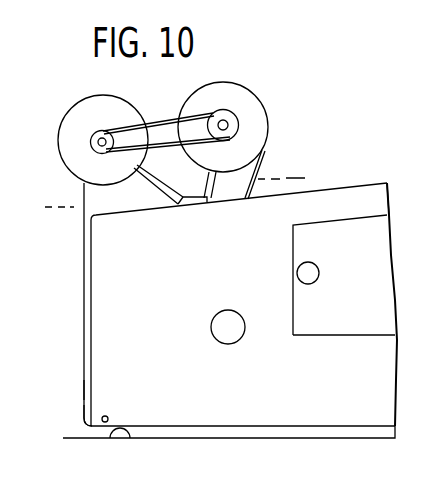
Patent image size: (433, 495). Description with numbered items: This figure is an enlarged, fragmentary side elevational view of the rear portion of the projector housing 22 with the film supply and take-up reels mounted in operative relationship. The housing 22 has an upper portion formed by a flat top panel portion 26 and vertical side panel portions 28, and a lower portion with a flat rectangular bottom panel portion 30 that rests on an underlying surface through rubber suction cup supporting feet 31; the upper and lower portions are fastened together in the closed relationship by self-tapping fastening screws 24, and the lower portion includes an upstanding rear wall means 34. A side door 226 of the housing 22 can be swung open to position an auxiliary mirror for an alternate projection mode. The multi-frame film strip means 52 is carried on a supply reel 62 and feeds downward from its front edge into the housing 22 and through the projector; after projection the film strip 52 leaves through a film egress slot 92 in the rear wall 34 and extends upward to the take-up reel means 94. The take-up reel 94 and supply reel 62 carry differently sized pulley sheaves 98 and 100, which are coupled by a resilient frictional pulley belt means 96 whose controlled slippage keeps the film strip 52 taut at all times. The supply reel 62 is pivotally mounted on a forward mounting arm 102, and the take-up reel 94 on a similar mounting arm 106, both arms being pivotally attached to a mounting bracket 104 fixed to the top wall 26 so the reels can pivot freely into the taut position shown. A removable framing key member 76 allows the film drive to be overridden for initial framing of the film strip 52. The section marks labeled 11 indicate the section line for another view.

The section line 11- 11 is at (303, 112).
The housing 22 is at (347, 183).
The self-tapping fastening screws 24 is at (110, 418).
The top panel portion 26 is at (388, 183).
The side panel portions 28 is at (175, 262).
The bottom panel portion 30 is at (224, 434).
The rubber suction cup supporting feet 31 is at (114, 440).
The rear wall means 34 is at (88, 280).
The multi-frame film strip means 52 is at (263, 188).
The supply reel 62 is at (242, 98).
The framing key member 76 is at (213, 328).
The film egress slot 92 is at (88, 418).
The take-up reel means 94 is at (84, 107).
The pulley belt means 96 is at (180, 146).
The pulley sheave 98 is at (102, 131).
The pulley sheave 100 is at (222, 111).
The forward mounting arm 102 is at (212, 185).
The mounting bracket 104 is at (195, 204).
The mounting arm 106 is at (152, 175).
The side door 226 is at (348, 323).